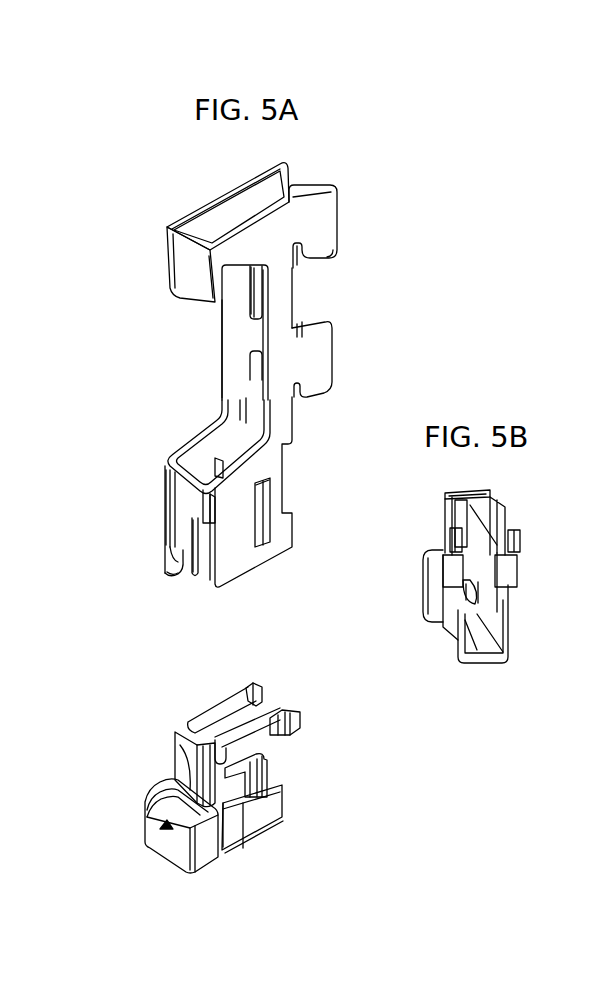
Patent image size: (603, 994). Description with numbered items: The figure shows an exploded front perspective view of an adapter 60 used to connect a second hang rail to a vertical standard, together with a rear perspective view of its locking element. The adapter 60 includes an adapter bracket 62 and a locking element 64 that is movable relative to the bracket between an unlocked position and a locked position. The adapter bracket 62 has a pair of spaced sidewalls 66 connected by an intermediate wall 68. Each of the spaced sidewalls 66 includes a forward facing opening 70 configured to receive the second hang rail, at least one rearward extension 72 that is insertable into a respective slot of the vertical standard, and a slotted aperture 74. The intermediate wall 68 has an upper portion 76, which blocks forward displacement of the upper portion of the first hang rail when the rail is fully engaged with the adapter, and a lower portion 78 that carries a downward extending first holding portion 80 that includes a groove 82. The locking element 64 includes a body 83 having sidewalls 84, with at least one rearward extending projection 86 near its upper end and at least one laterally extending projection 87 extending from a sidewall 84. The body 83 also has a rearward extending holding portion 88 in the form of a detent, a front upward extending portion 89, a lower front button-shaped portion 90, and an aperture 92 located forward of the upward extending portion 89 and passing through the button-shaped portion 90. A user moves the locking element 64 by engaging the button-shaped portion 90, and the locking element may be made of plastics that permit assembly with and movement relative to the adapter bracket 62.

In FIG. 5A, the adapter 60 is at (92, 262).
In FIG. 5A, the adapter bracket 62 is at (298, 425).
In FIG. 5A, the locking element 64 is at (276, 827).
In FIG. 5A, the spaced sidewalls 66 is at (238, 203).
In FIG. 5A, the intermediate wall 68 is at (197, 300).
In FIG. 5A, the forward facing opening 70 is at (262, 324).
In FIG. 5A, the rearward extension 72 is at (328, 260).
In FIG. 5A, the slotted aperture 74 is at (218, 433).
In FIG. 5A, the upper portion 76 is at (166, 286).
In FIG. 5A, the lower portion 78 is at (178, 488).
In FIG. 5A, the first holding portion 80 is at (197, 574).
In FIG. 5A, the groove 82 is at (178, 563).
In FIG. 5A, the body 83 is at (284, 800).
In FIG. 5B, the body 83 is at (455, 628).
In FIG. 5A, the sidewalls 84 is at (236, 800).
In FIG. 5A, the rearward extending projection 86 is at (257, 686).
In FIG. 5B, the rearward extending projection 86 is at (450, 532).
In FIG. 5A, the laterally extending projection 87 is at (268, 775).
In FIG. 5B, the laterally extending projection 87 is at (448, 560).
In FIG. 5B, the rearward extending holding portion 88 is at (425, 612).
In FIG. 5A, the front upward extending portion 89 is at (178, 730).
In FIG. 5B, the front upward extending portion 89 is at (490, 492).
In FIG. 5A, the button-shaped portion 90 is at (147, 808).
In FIG. 5A, the aperture 92 is at (178, 762).